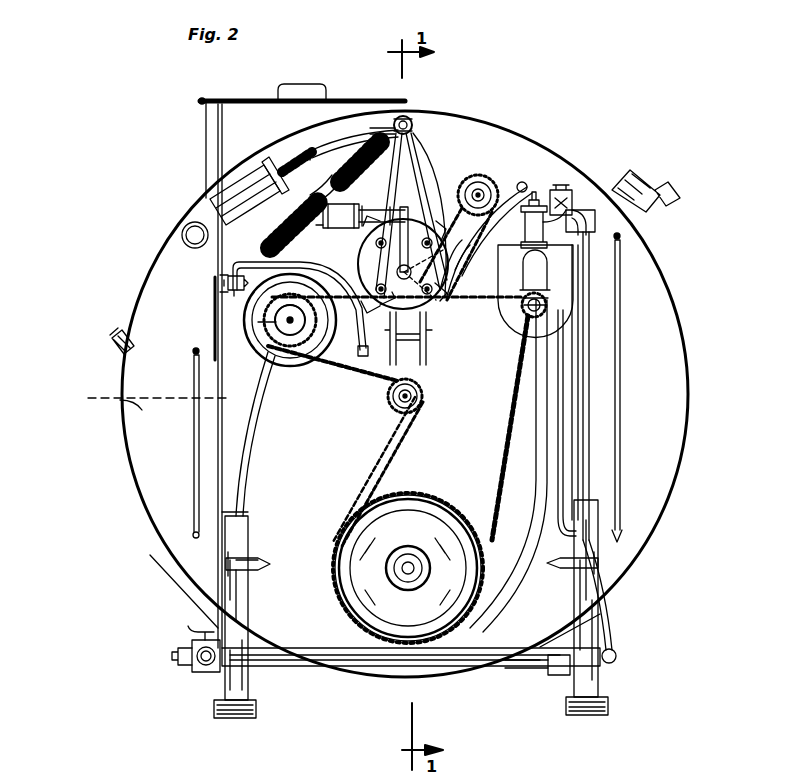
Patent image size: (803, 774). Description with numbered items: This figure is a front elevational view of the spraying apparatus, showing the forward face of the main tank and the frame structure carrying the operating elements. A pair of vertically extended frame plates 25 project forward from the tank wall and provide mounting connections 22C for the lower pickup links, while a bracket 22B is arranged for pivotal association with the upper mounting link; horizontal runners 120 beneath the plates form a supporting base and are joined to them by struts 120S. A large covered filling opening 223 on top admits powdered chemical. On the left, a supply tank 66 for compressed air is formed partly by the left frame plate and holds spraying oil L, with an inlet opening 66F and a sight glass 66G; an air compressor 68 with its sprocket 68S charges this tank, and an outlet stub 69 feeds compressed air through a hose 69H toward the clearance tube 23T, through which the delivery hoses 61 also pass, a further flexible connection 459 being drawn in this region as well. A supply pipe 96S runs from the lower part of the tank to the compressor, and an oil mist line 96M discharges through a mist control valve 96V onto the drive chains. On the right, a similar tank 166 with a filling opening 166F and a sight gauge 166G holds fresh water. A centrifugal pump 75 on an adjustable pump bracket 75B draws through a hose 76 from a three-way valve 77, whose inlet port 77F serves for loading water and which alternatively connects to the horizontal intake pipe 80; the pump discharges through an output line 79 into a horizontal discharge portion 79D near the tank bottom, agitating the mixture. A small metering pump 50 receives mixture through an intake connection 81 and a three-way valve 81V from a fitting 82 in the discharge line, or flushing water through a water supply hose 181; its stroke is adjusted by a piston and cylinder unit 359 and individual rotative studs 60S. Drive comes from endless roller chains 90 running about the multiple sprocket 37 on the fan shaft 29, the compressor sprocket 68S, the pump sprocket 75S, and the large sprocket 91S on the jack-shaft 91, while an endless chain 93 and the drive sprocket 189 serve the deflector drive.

The rearwardly extending bracket 22B is at (428, 342).
The mounting connections 22C is at (258, 562).
The clearance tube 23T is at (410, 120).
The frame plates 25 is at (208, 578).
The shaft 29 is at (403, 408).
The multiple sprocket 37 is at (398, 412).
The metering pump 50 is at (385, 306).
The rotative studs 60S is at (435, 295).
The delivery hoses 61 is at (350, 165).
The supply tank 66 is at (128, 458).
The inlet opening 66F is at (116, 336).
The sight glass 66G is at (196, 482).
The air compressor 68 is at (272, 362).
The sprocket of the compressor 68S is at (305, 352).
The outlet stub 69 is at (248, 190).
The hose 69H is at (335, 138).
The centrifugal pump 75 is at (560, 278).
The adjustable pump bracket 75B is at (592, 312).
The sprocket of the pump 75S is at (522, 312).
The hose 76 is at (495, 612).
The three-way valve 77 is at (174, 682).
The inlet port 77F is at (196, 636).
The output line 79 is at (525, 226).
The horizontal discharge portion 79D is at (542, 672).
The horizontal intake pipe 80 is at (270, 665).
The intake connection 81 is at (522, 183).
The three-way valve 81V is at (566, 186).
The fitting 82 is at (595, 222).
The endless roller chains 90 is at (518, 424).
The jack-shaft 91 is at (380, 574).
The large sprocket 91S is at (412, 510).
The endless chain 93 is at (472, 260).
The oil mist line 96M is at (352, 360).
The supply pipe 96S is at (240, 452).
The mist control valve 96V is at (230, 280).
The runners 120 is at (238, 712).
The struts 120S is at (228, 688).
The tank 166 is at (660, 388).
The filling opening 166F is at (642, 180).
The sight gauge 166G is at (620, 405).
The water supply hose 181 is at (565, 492).
The drive sprocket 189 is at (476, 176).
The covered filling opening 223 is at (222, 106).
The piston and cylinder unit 359 is at (333, 228).
The corrugated hose 459 is at (284, 218).
The spraying oil L is at (146, 400).